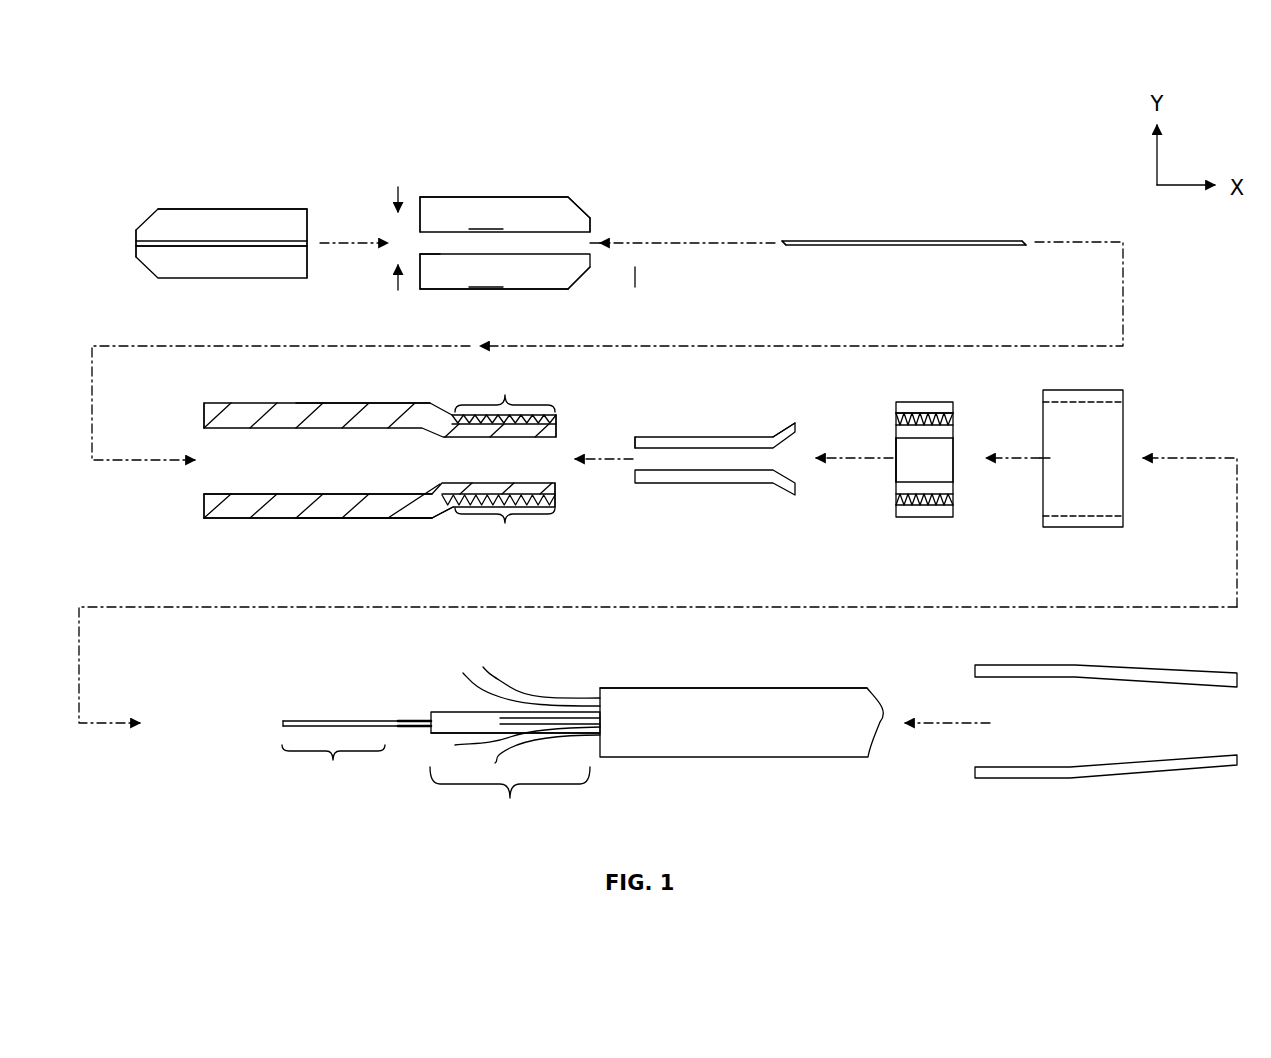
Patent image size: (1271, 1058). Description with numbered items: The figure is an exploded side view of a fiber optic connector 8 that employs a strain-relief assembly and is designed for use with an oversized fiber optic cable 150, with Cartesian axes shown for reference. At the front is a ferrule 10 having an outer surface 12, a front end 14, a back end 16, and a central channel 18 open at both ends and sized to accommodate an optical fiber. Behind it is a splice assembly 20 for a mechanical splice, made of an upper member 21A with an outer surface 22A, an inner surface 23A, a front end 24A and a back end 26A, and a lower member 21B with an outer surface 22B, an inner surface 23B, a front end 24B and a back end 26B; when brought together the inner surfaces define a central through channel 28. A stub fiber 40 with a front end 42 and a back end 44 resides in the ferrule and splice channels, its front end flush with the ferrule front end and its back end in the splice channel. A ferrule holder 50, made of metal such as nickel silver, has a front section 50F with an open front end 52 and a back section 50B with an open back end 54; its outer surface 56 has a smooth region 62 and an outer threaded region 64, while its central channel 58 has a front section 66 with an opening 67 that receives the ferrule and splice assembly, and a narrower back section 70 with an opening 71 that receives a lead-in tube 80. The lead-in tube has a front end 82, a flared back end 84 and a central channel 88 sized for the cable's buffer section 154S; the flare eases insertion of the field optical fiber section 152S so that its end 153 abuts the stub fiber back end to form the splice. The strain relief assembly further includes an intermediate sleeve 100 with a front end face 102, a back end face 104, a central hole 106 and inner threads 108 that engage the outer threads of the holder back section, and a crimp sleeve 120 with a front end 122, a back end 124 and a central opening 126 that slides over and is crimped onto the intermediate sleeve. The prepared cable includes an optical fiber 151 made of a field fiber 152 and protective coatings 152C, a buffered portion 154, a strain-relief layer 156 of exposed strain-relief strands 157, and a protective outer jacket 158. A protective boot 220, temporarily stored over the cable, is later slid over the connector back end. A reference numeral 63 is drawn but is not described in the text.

The fiber optic connector 8 is at (967, 146).
The ferrule 10 is at (231, 190).
The outer surface 12 is at (205, 208).
The front end 14 is at (136, 231).
The back end 16 is at (308, 218).
The central channel 18 is at (195, 247).
The splice assembly 20 is at (471, 176).
The upper member 21A is at (505, 214).
The lower member 21B is at (505, 271).
The outer surface 22A is at (536, 197).
The outer surface 22B is at (524, 290).
The inner surface 23A is at (530, 236).
The inner surface 23B is at (440, 245).
The front end 24A is at (421, 204).
The front end 24B is at (421, 285).
The back end 26A is at (591, 218).
The back end 26B is at (592, 268).
The central through channel 28 is at (602, 243).
The stub fiber 40 is at (840, 241).
The front end 42 is at (784, 246).
The back end 44 is at (1024, 245).
The ferrule holder 50 is at (292, 386).
The back section 50B is at (496, 541).
The front section 50F is at (286, 540).
The front end 52 is at (203, 411).
The back end 54 is at (557, 424).
The outer surface 56 is at (346, 403).
The central channel 58 is at (315, 478).
The smooth region 62 is at (332, 523).
The lower jaw step 63 is at (448, 521).
The outer threaded region 64 is at (505, 386).
The front section 66 is at (252, 474).
The opening 67 is at (199, 474).
The back section 70 is at (480, 475).
The opening 71 is at (563, 474).
The lead-in tube 80 is at (728, 430).
The front end 82 is at (635, 437).
The flared back end 84 is at (793, 428).
The central channel 88 is at (692, 459).
The intermediate sleeve 100 is at (917, 386).
The front end face 102 is at (893, 470).
The back end face 104 is at (953, 470).
The central hole 106 is at (888, 456).
The inner threads 108 is at (921, 431).
The crimp sleeve 120 is at (1115, 384).
The front end 122 is at (1043, 402).
The back end 124 is at (1123, 516).
The central opening 126 is at (1024, 509).
The fiber optic cable 150 is at (786, 684).
The optical fiber 151 is at (411, 744).
The field fiber 152 is at (308, 721).
The protective coatings 152C is at (400, 720).
The field optical fiber section 152S is at (333, 770).
The end 153 is at (283, 727).
The buffered portion 154 is at (463, 708).
The buffer section 154S is at (510, 798).
The strain-relief layer 156 is at (516, 677).
The strain-relief strands 157 is at (500, 670).
The protective outer jacket 158 is at (648, 688).
The protective boot 220 is at (1149, 657).